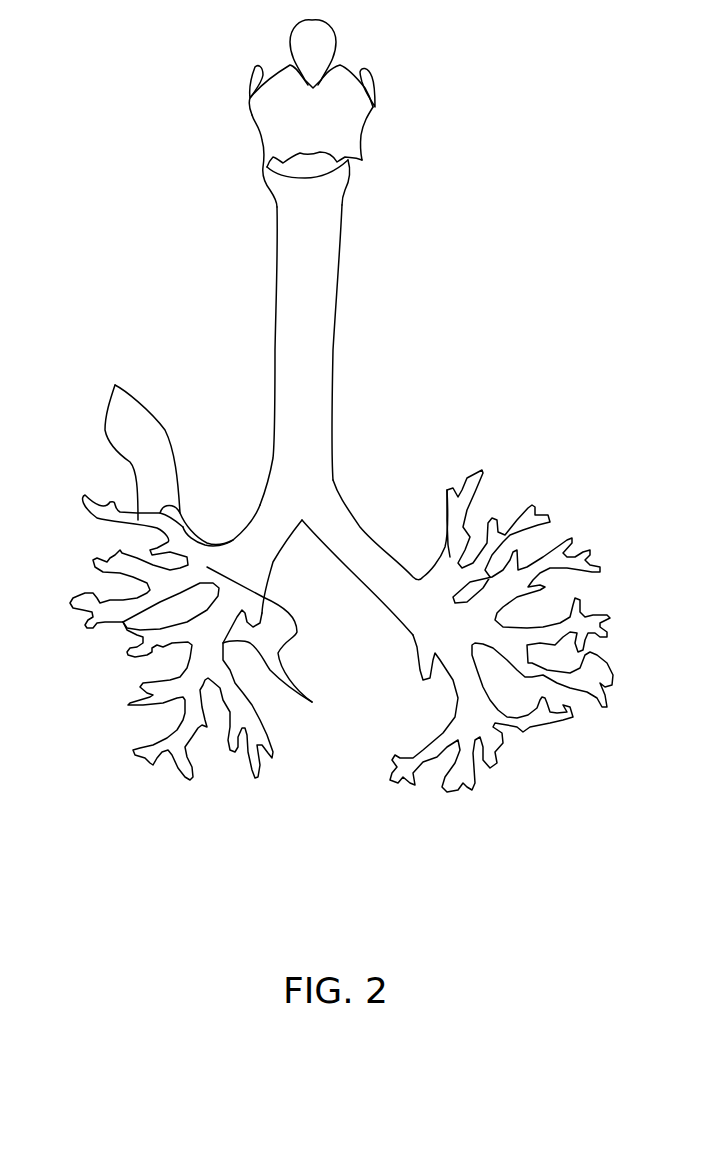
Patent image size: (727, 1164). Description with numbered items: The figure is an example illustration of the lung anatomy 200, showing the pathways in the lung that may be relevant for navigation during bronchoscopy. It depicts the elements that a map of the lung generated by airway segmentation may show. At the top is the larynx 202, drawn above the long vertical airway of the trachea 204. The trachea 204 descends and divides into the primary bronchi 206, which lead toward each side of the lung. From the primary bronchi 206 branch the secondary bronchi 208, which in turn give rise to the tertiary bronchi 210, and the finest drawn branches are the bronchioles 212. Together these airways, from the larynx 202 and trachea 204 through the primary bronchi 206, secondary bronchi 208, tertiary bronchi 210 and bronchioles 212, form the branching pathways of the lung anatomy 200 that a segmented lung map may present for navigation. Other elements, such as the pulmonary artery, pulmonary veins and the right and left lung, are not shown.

The lung anatomy 200 is at (635, 47).
The larynx 202 is at (357, 118).
The trachea 204 is at (300, 332).
The primary bronchi 206 is at (273, 527).
The secondary bronchi 208 is at (274, 650).
The tertiary bronchi 210 is at (161, 450).
The bronchioles 212 is at (100, 623).